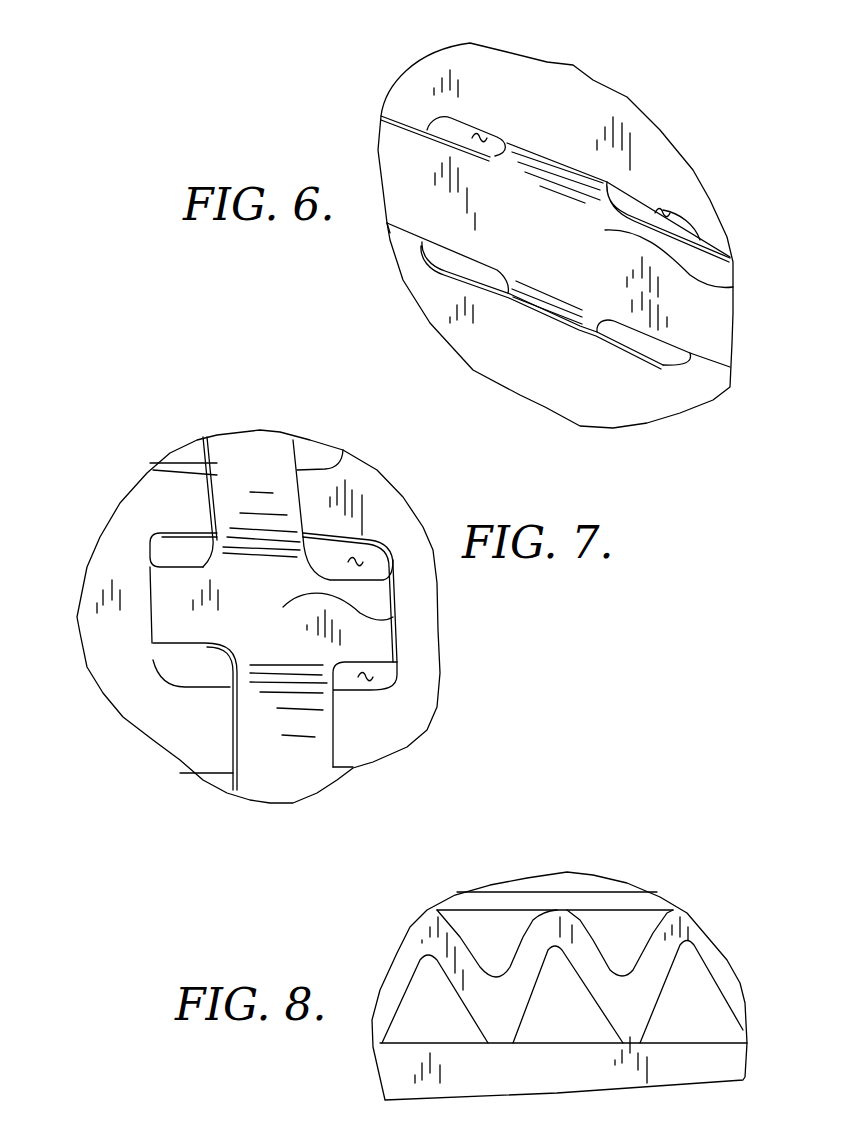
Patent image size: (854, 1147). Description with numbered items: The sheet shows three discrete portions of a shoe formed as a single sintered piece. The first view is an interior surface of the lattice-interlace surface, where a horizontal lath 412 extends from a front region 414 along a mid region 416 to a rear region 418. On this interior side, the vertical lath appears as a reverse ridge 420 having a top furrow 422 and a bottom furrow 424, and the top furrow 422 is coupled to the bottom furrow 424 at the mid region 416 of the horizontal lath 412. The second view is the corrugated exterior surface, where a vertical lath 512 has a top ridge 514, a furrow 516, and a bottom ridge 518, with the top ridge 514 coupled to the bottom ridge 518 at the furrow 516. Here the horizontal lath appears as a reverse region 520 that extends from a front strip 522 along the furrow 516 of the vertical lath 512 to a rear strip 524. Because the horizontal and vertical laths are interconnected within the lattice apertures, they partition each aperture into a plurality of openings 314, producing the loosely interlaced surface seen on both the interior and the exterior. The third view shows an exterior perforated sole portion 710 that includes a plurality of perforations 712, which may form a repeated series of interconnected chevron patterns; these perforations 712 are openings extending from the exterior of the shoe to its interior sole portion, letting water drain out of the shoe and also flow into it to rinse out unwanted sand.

In FIG. 6, the openings 314 is at (480, 135).
In FIG. 7, the openings 314 is at (356, 562).
In FIG. 6, the horizontal lath 412 is at (400, 111).
In FIG. 6, the front region 414 is at (400, 212).
In FIG. 6, the mid region 416 is at (547, 277).
In FIG. 6, the rear region 418 is at (707, 337).
In FIG. 6, the reverse ridge 420 is at (733, 288).
In FIG. 6, the top furrow 422 is at (552, 178).
In FIG. 6, the bottom furrow 424 is at (580, 307).
In FIG. 7, the vertical lath 512 is at (300, 462).
In FIG. 7, the top ridge 514 is at (233, 500).
In FIG. 7, the furrow 516 is at (245, 620).
In FIG. 7, the bottom ridge 518 is at (265, 787).
In FIG. 7, the reverse region 520 is at (393, 617).
In FIG. 7, the front strip 522 is at (160, 583).
In FIG. 7, the rear strip 524 is at (383, 640).
In FIG. 8, the exterior perforated sole portion 710 is at (425, 932).
In FIG. 8, the perforations 712 is at (613, 927).